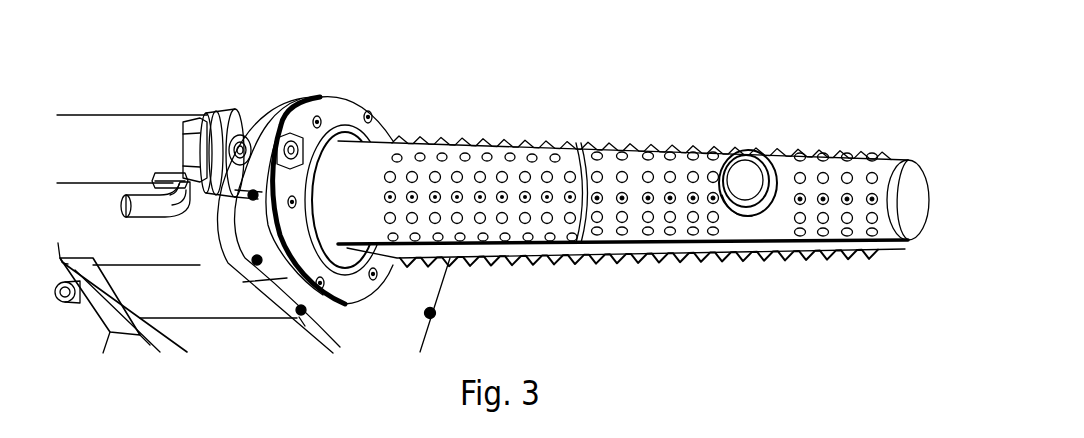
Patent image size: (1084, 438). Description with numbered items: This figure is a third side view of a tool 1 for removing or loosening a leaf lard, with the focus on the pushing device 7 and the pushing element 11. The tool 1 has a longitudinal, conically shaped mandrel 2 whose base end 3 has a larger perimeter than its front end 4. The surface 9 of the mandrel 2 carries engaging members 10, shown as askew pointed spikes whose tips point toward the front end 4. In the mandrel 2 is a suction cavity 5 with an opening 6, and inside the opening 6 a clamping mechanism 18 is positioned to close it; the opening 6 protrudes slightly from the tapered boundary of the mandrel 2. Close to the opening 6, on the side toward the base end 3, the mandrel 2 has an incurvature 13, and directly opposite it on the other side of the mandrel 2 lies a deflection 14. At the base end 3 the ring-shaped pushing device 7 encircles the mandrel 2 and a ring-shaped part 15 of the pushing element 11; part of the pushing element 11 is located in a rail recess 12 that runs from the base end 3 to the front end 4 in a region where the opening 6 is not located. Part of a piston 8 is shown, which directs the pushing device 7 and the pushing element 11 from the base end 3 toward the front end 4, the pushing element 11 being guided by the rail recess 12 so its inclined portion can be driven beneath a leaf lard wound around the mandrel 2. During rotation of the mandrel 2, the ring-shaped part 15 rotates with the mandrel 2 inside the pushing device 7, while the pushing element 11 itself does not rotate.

The tool 1 is at (893, 45).
The longitudinal mandrel 2 is at (353, 176).
The base end 3 is at (381, 100).
The front end 4 is at (918, 152).
The suction cavity 5 is at (751, 152).
The opening 6 is at (741, 164).
The pushing device 7 is at (292, 112).
The piston 8 is at (91, 170).
The surface 9 is at (477, 158).
The engaging members 10 is at (437, 223).
The pushing element 11 is at (337, 112).
The rail recess 12 is at (563, 247).
The incurvature 13 is at (679, 128).
The deflection 14 is at (710, 270).
The ring-shaped part 15 is at (353, 263).
The clamping mechanism 18 is at (755, 173).